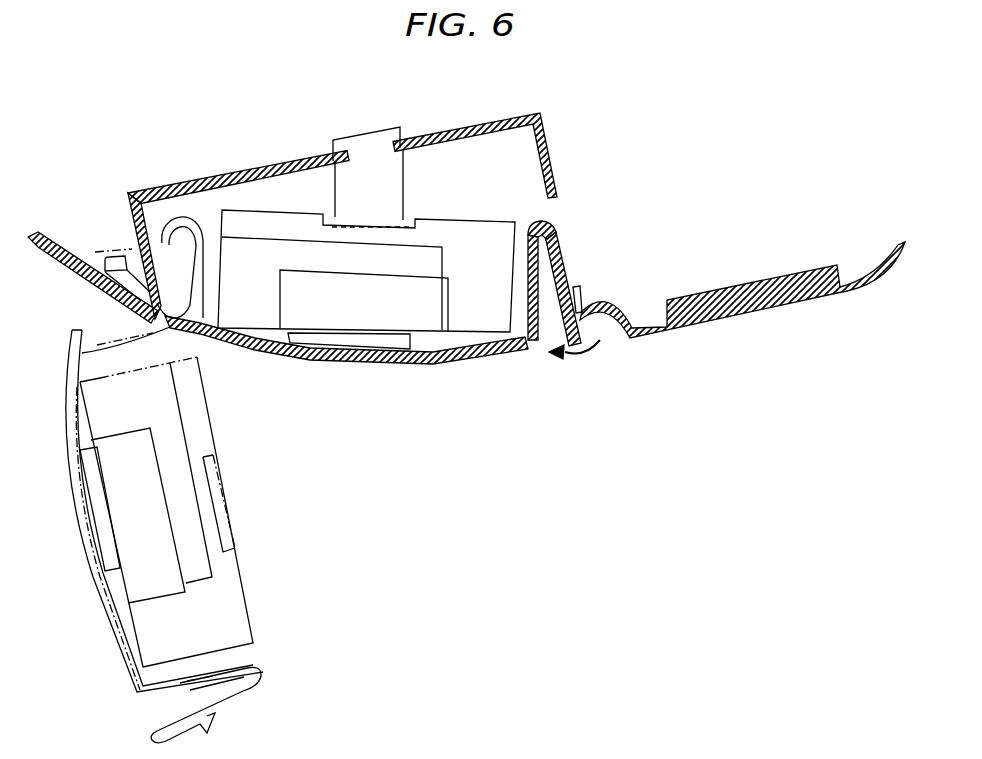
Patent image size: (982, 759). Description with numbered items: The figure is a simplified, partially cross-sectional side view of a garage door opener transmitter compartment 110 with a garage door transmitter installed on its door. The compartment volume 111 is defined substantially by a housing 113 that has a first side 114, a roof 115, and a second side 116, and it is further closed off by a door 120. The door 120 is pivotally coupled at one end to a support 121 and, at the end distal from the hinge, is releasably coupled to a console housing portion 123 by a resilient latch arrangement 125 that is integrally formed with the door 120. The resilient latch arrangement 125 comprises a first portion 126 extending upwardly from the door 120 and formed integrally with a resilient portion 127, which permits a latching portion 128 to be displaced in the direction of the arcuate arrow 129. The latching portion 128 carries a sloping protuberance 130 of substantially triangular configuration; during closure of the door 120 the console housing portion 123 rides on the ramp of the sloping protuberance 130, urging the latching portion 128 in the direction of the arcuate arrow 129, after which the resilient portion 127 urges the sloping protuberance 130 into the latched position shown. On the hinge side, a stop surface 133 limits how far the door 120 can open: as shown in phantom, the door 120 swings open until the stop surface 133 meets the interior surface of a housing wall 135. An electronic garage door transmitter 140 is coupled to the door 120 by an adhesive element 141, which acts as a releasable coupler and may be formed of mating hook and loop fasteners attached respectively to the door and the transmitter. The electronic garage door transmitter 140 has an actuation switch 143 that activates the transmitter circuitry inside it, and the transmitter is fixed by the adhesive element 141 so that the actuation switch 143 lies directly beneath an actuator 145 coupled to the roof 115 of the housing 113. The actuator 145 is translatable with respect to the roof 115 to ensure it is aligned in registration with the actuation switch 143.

The garage door opener transmitter compartment 110 is at (500, 455).
The compartment volume 111 is at (467, 160).
The housing 113 is at (231, 147).
The first side 114 is at (131, 216).
The roof 115 is at (167, 185).
The second side 116 is at (553, 160).
The door 120 is at (450, 353).
The support 121 is at (103, 277).
The console housing portion 123 is at (610, 303).
The resilient latch arrangement 125 is at (552, 205).
The first portion 126 is at (533, 323).
The resilient portion 127 is at (538, 222).
The latching portion 128 is at (556, 243).
The arcuate arrow 129 is at (590, 355).
The sloping protuberance 130 is at (576, 283).
The stop surface 133 is at (137, 313).
The housing wall 135 is at (92, 297).
The electronic garage door transmitter 140 is at (252, 313).
The adhesive element 141 is at (325, 343).
The actuation switch 143 is at (415, 223).
The actuator 145 is at (382, 142).